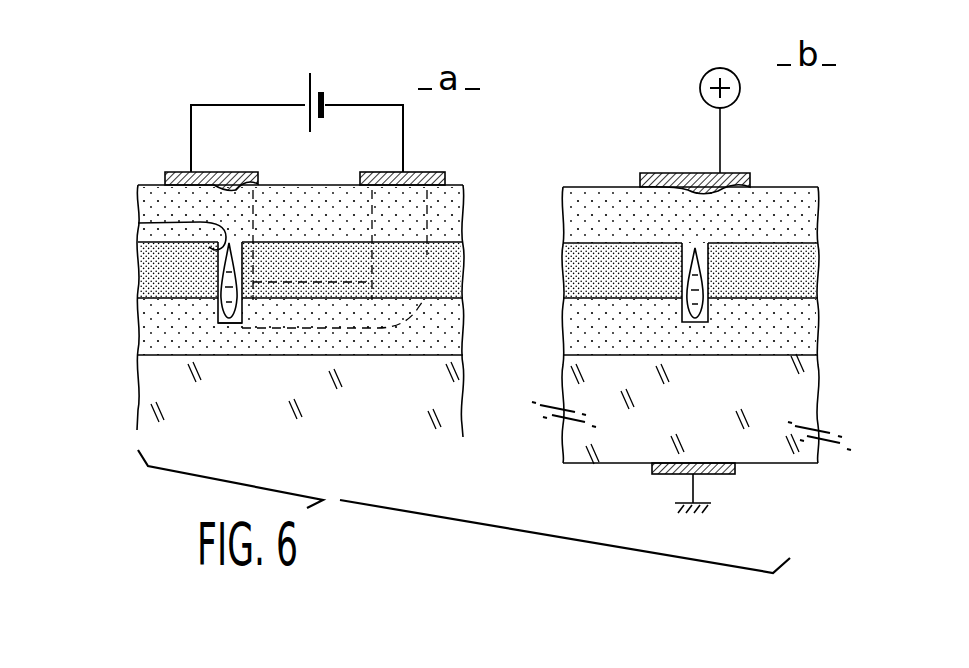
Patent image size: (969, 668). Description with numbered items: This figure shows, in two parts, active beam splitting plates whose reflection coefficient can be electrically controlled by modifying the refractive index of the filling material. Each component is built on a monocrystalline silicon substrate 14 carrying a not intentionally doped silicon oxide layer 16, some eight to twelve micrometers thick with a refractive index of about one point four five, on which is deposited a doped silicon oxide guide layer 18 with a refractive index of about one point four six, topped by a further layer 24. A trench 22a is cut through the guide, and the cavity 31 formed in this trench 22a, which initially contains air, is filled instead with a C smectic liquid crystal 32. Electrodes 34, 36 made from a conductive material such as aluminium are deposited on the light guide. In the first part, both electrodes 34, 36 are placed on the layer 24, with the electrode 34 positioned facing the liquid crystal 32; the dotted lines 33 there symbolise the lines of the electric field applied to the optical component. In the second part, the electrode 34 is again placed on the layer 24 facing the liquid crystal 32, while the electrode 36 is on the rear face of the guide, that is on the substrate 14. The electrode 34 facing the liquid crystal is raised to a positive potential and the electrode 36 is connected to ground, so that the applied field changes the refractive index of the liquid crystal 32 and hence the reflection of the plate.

The monocrystalline silicon substrate 14 is at (173, 395).
The silicon oxide layer 16 is at (158, 322).
The silicon oxide guide layer 18 is at (577, 282).
The layer 24 is at (155, 193).
The trench 22a is at (138, 223).
The cavity 31 is at (231, 319).
The C smectic liquid crystal 32 is at (227, 268).
The dotted lines 33 is at (352, 330).
The electrode 34 is at (166, 180).
The electrode 36 is at (443, 177).